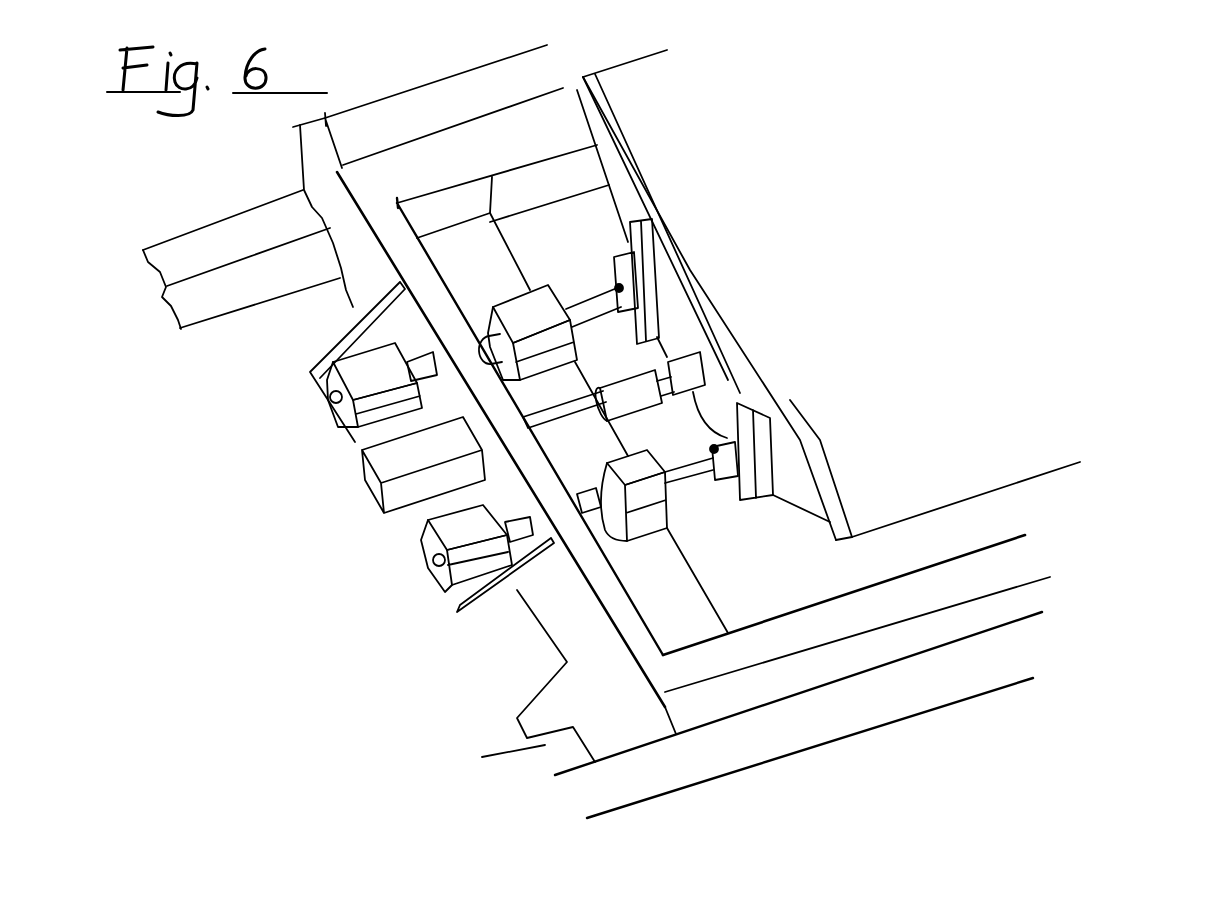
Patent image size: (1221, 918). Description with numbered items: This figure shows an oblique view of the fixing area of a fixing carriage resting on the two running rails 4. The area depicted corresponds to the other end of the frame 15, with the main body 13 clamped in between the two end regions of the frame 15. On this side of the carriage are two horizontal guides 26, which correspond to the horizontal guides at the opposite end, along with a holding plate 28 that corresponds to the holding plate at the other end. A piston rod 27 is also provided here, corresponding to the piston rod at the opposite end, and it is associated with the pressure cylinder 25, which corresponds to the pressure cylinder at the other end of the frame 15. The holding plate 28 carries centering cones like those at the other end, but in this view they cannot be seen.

The running rails 4 is at (243, 297).
The main body 13 is at (970, 437).
The frame 15 is at (988, 572).
The pressure cylinder 25 is at (400, 502).
The horizontal guides 26 is at (713, 446).
The piston rod 27 is at (698, 365).
The holding plate 28 is at (735, 380).